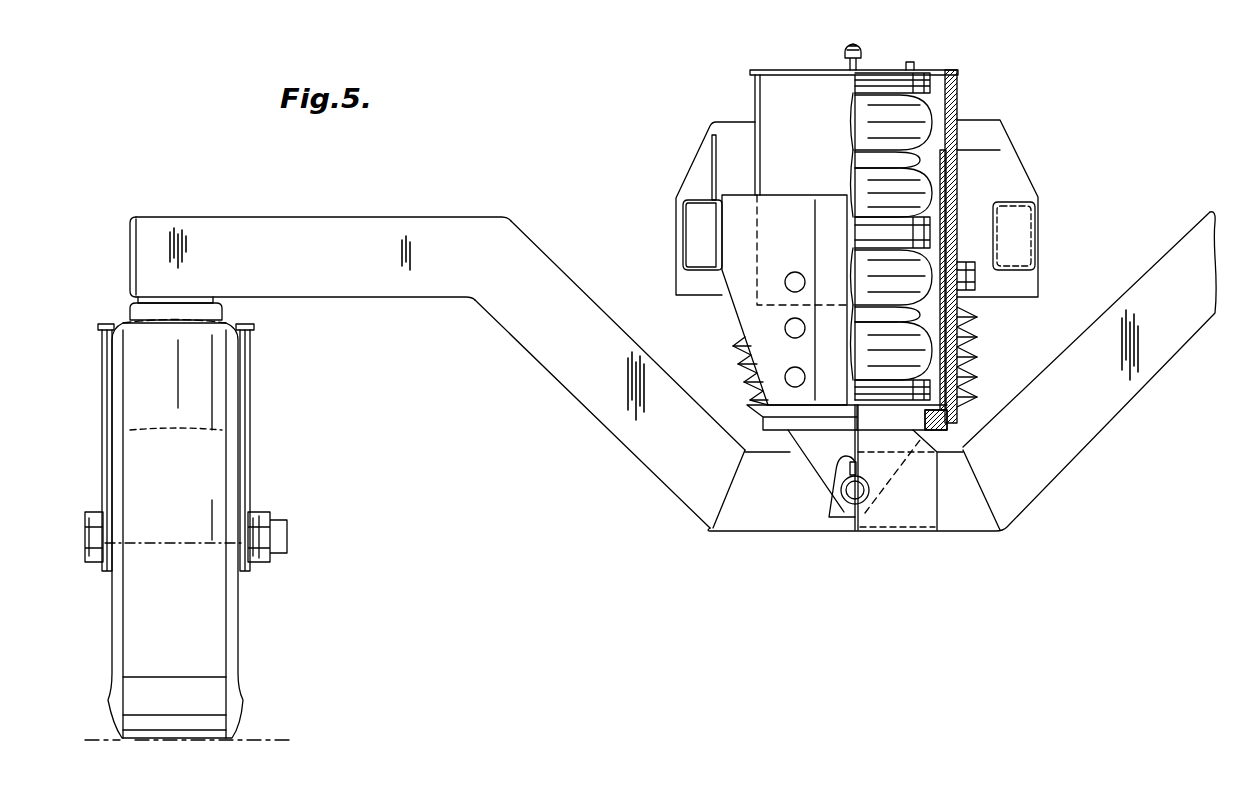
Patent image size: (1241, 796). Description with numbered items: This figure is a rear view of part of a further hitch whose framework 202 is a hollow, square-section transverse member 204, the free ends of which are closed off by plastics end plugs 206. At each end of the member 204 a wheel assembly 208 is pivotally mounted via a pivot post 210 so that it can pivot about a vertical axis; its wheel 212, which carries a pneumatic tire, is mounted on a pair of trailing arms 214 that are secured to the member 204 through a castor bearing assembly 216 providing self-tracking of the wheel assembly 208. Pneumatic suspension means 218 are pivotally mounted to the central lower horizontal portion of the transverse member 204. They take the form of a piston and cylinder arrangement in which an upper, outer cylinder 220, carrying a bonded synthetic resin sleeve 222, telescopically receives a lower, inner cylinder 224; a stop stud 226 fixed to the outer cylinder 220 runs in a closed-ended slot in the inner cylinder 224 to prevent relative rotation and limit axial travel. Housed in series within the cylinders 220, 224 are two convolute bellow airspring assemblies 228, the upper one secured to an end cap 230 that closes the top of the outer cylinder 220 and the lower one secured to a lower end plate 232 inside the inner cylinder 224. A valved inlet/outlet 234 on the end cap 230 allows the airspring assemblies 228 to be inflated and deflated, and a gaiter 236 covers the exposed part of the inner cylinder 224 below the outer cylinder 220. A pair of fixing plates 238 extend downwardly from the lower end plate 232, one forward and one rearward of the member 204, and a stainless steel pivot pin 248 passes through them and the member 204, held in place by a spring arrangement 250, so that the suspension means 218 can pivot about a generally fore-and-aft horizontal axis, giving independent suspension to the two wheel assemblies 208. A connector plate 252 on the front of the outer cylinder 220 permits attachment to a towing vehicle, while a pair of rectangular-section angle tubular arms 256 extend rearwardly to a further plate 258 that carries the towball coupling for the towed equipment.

The framework 202 is at (486, 213).
The transverse member 204 is at (500, 313).
The end plugs 206 is at (130, 228).
The wheel assembly 208 is at (258, 479).
The pivot post 210 is at (172, 292).
The wheel 212 is at (215, 610).
The trailing arms 214 is at (100, 328).
The castor bearing assembly 216 is at (218, 308).
The pneumatic suspension means 218 is at (965, 101).
The outer cylinder 220 is at (958, 172).
The sleeve 222 is at (960, 135).
The inner cylinder 224 is at (980, 328).
The stop stud 226 is at (978, 282).
The convolute bellow airspring assemblies 228 is at (912, 120).
The end cap 230 is at (760, 75).
The lower end plate 232 is at (962, 443).
The valved inlet/outlet 234 is at (860, 52).
The gaiter 236 is at (738, 358).
The fixing plates 238 is at (818, 460).
The pivot pin 248 is at (866, 494).
The spring arrangement 250 is at (846, 462).
The connector plate 252 is at (696, 170).
The angle tubular arms 256 is at (1036, 205).
The further plate 258 is at (735, 288).